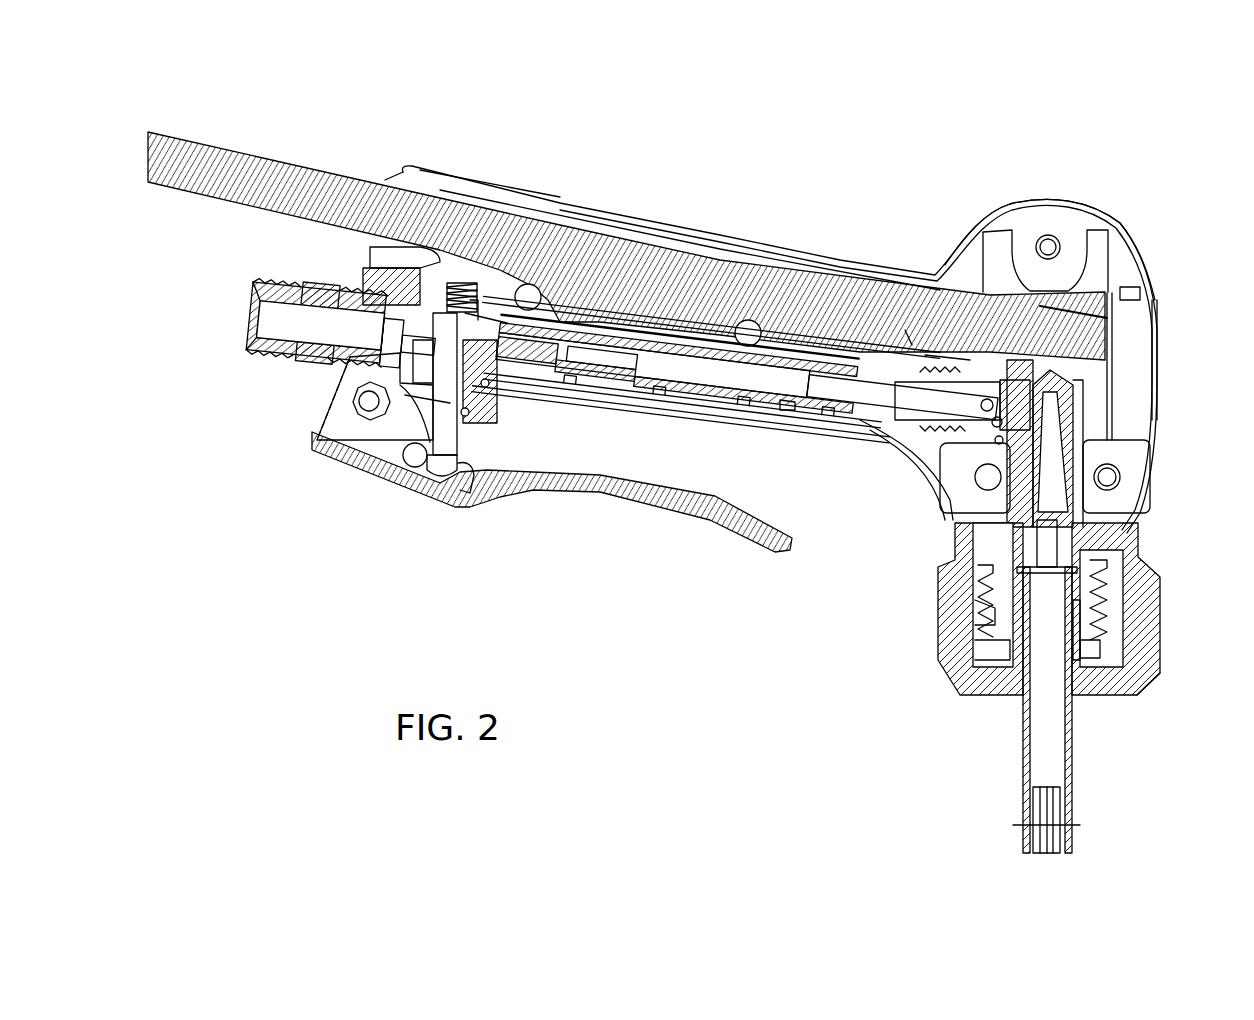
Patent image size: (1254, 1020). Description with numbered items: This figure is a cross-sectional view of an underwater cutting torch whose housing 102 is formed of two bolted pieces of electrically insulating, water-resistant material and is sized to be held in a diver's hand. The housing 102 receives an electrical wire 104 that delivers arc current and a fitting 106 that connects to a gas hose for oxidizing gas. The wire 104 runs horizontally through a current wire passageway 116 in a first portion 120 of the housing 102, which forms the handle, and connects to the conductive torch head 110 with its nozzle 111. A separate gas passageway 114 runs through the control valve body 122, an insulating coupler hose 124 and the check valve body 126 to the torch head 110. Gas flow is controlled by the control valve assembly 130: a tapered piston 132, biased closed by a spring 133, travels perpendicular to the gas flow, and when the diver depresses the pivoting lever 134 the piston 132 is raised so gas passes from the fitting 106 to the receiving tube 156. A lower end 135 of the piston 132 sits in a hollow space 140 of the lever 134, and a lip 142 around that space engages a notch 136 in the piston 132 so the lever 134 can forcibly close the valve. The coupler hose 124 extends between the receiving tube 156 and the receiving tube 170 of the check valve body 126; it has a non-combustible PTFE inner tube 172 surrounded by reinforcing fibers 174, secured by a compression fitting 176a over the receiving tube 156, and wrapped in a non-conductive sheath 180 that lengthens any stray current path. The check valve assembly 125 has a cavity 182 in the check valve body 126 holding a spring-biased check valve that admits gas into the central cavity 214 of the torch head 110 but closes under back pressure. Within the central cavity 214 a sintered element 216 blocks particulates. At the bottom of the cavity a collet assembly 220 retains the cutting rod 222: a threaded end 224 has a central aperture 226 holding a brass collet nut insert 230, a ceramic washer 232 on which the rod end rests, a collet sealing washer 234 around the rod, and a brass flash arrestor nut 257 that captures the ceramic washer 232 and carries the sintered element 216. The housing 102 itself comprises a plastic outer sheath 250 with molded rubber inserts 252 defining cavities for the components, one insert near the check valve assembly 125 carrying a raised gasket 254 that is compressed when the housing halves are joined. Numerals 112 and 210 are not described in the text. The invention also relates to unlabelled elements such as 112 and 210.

The housing 102 is at (542, 202).
The electrical wire 104 is at (265, 160).
The fitting 106 is at (258, 340).
The torch head 110 is at (1157, 303).
The nozzle 111 is at (1150, 675).
The link 112 is at (447, 404).
The gas passageway 114 is at (660, 330).
The current wire passageway 116 is at (802, 236).
The first portion 120 is at (522, 170).
The control valve body 122 is at (477, 402).
The insulating coupler hose 124 is at (755, 402).
The check valve assembly 125 is at (921, 352).
The check valve body 126 is at (977, 360).
The control valve assembly 130 is at (377, 477).
The piston 132 is at (440, 408).
The spring 133 is at (455, 283).
The pivoting lever 134 is at (602, 497).
The lower end 135 is at (460, 490).
The notch 136 is at (462, 468).
The hollow space 140 is at (427, 442).
The lip 142 is at (425, 445).
The receiving tube 156 is at (548, 368).
The receiving tube 170 is at (851, 395).
The inner tube 172 is at (710, 380).
The reinforcing fibers 174 is at (685, 384).
The compression fitting 176a is at (608, 378).
The sheath 180 is at (785, 405).
The cavity 182 is at (963, 423).
The trigger 210 is at (1093, 398).
The central cavity 214 is at (1045, 487).
The sintered element 216 is at (948, 677).
The collet assembly 220 is at (1163, 582).
The cutting rod 222 is at (1025, 722).
The threaded end 224 is at (1085, 645).
The central aperture 226 is at (1075, 623).
The brass collet nut insert 230 is at (1040, 570).
The ceramic washer 232 is at (1089, 697).
The collet sealing washer 234 is at (1010, 600).
The plastic outer sheath 250 is at (1070, 198).
The molded rubber inserts 252 is at (1098, 297).
The raised gasket 254 is at (1040, 305).
The flash arrestor nut 257 is at (937, 630).